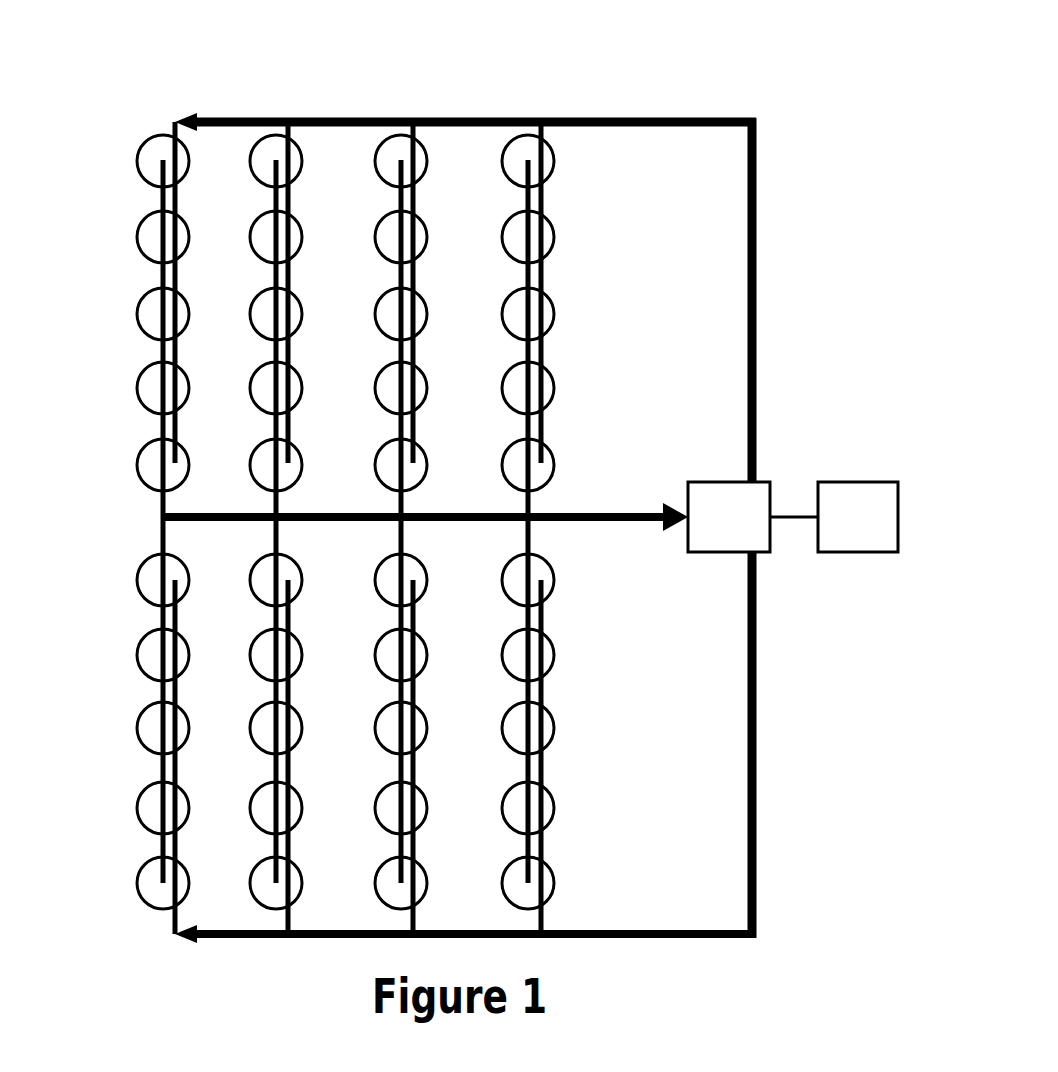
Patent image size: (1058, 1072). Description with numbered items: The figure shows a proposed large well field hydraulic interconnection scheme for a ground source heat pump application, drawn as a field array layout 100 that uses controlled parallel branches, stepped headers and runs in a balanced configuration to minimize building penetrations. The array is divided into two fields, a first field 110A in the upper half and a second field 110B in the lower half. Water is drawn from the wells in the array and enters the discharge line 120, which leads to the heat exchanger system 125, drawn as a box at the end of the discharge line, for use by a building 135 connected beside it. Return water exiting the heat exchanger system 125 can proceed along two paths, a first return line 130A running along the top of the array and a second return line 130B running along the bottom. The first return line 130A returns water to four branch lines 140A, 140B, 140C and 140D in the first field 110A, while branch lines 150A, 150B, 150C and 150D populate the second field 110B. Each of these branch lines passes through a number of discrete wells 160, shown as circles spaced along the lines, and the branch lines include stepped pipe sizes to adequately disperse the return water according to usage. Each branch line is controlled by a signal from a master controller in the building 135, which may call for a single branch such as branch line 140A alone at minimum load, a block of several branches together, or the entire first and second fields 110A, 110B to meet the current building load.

The field array layout 100 is at (827, 486).
The first field 110A is at (445, 319).
The second field 110B is at (447, 725).
The discharge line 120 is at (591, 499).
The pump/valve unit 125 is at (722, 562).
The building 135 is at (850, 562).
The first return line 130A is at (631, 109).
The second return line 130B is at (673, 947).
The branch line 140A is at (551, 199).
The branch line 140B is at (423, 199).
The branch line 140C is at (298, 199).
The branch line 140D is at (185, 199).
The branch line 150A is at (551, 847).
The branch line 150B is at (423, 847).
The branch line 150C is at (298, 847).
The branch line 150D is at (185, 847).
The well 160 is at (126, 316).